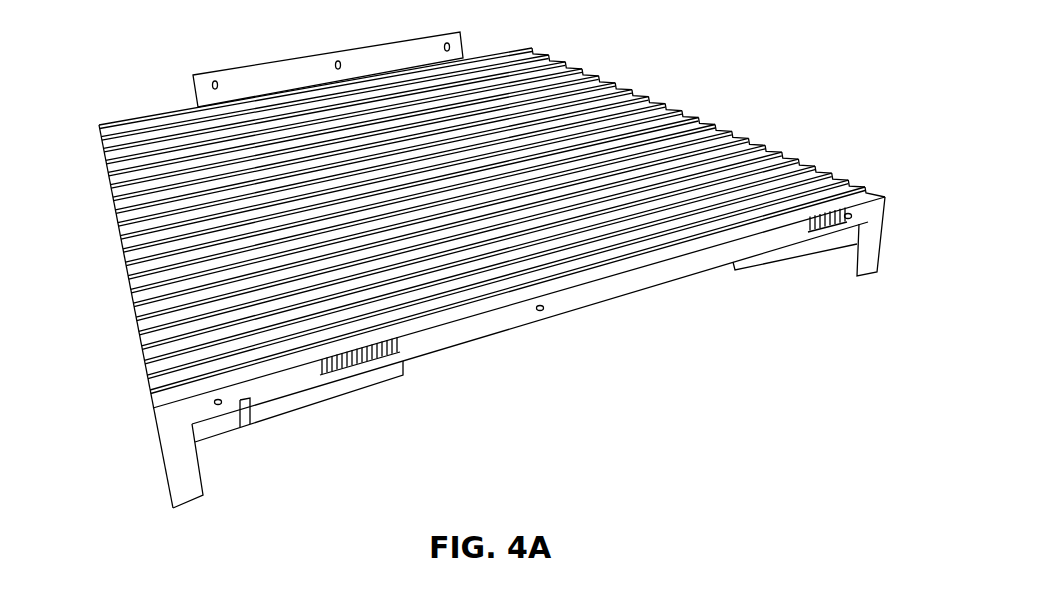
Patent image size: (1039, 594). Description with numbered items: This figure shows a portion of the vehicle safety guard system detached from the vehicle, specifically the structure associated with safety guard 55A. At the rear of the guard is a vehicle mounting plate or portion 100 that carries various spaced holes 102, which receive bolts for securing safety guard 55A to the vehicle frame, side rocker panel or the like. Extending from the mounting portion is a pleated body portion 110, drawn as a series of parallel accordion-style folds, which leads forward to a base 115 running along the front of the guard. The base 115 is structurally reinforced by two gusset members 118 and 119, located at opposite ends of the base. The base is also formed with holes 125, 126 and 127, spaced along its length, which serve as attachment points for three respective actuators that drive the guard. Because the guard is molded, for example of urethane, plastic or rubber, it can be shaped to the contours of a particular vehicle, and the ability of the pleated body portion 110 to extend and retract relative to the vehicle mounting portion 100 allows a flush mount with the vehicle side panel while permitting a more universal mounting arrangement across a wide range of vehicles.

The safety guard 55A is at (780, 121).
The vehicle mounting plate 100 is at (242, 80).
The holes 102 is at (345, 68).
The pleated body portion 110 is at (118, 246).
The base 115 is at (455, 340).
The gusset member 118 is at (240, 426).
The gusset member 119 is at (830, 243).
The hole 125 is at (855, 220).
The hole 126 is at (546, 312).
The hole 127 is at (223, 410).